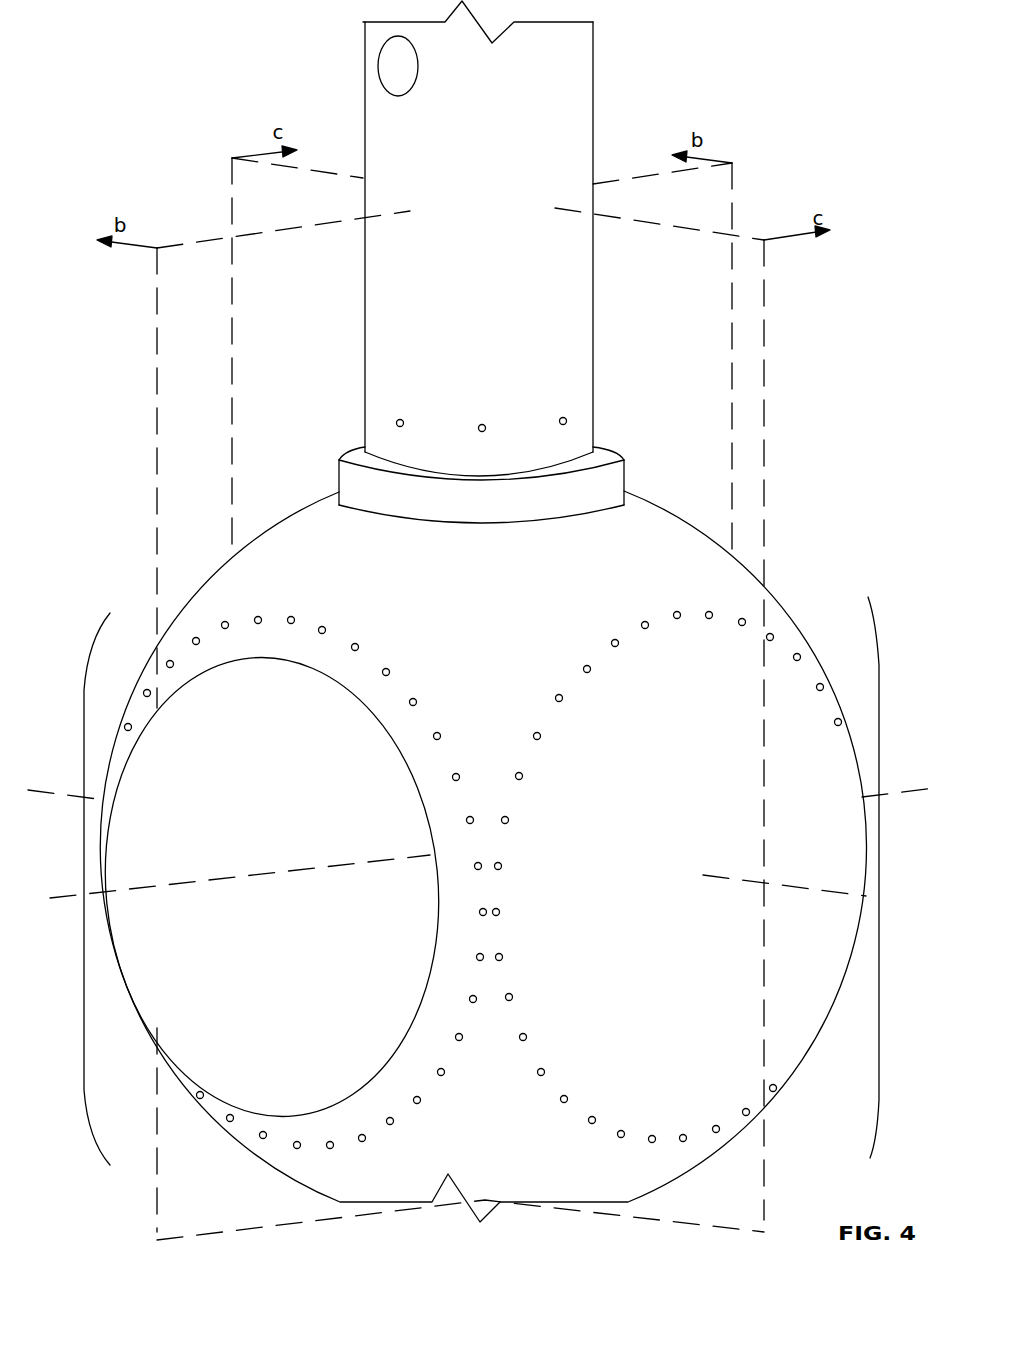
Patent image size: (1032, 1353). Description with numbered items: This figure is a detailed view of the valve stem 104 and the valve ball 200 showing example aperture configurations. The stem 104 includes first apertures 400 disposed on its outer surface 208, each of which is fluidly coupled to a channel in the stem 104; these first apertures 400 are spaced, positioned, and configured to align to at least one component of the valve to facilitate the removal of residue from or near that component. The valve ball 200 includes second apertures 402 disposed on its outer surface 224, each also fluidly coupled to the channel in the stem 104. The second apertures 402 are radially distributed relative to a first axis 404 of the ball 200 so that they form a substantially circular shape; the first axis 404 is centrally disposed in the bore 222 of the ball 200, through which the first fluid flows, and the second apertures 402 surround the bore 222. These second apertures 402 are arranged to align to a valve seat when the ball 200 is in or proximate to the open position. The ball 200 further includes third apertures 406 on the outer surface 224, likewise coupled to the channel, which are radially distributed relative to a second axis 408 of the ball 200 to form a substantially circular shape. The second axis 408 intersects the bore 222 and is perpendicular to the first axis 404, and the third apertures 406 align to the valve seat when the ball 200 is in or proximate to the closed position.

The valve stem 104 is at (514, 226).
The outer surface 208 is at (582, 66).
The valve ball 200 is at (483, 856).
The bore 222 is at (176, 743).
The outer surface 224 is at (308, 1167).
The first apertures 400 is at (380, 407).
The second apertures 402 is at (292, 617).
The first axis 404 is at (358, 860).
The third apertures 406 is at (709, 611).
The second axis 408 is at (770, 880).